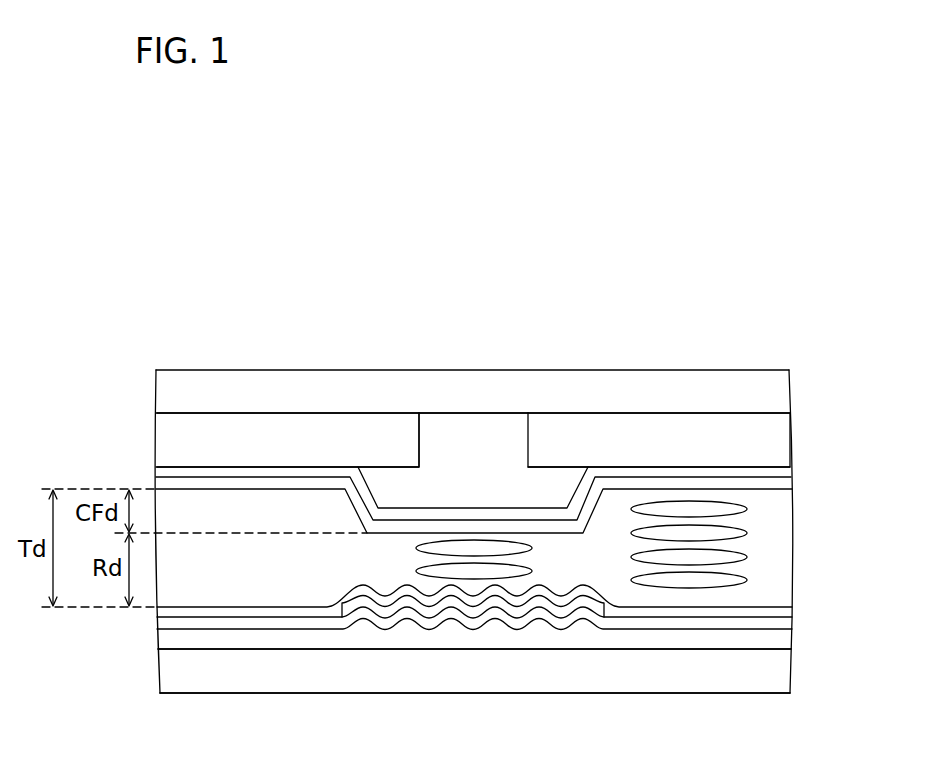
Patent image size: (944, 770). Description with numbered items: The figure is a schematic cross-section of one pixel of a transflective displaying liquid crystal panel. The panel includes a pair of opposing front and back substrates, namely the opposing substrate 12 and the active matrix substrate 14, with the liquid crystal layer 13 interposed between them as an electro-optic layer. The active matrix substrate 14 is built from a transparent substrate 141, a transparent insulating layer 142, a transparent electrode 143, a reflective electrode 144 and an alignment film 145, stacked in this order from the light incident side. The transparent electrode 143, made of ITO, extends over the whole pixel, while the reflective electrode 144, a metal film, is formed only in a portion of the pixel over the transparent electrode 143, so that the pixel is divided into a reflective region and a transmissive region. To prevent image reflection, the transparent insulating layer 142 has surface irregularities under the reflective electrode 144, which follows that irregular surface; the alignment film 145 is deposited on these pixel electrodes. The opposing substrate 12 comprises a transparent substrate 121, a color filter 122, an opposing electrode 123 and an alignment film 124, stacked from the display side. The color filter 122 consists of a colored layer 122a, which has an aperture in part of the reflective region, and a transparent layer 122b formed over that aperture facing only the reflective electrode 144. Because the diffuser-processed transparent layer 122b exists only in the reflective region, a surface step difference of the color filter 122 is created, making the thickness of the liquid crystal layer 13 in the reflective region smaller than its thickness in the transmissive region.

The opposing substrate 12 is at (397, 368).
The transparent substrate 121 is at (772, 393).
The color filter 122 is at (797, 444).
The colored layer 122a is at (282, 428).
The transparent layer 122b is at (482, 428).
The opposing electrode 123 is at (773, 477).
The alignment film 124 is at (773, 489).
The liquid crystal layer 13 is at (773, 548).
The active matrix substrate 14 is at (398, 696).
The transparent substrate 141 is at (773, 677).
The transparent insulating layer 142 is at (777, 640).
The transparent electrode 143 is at (777, 619).
The reflective electrode 144 is at (560, 612).
The alignment film 145 is at (777, 606).